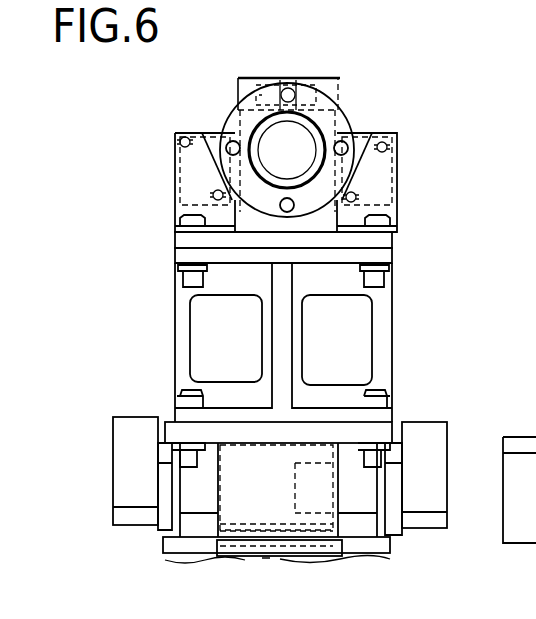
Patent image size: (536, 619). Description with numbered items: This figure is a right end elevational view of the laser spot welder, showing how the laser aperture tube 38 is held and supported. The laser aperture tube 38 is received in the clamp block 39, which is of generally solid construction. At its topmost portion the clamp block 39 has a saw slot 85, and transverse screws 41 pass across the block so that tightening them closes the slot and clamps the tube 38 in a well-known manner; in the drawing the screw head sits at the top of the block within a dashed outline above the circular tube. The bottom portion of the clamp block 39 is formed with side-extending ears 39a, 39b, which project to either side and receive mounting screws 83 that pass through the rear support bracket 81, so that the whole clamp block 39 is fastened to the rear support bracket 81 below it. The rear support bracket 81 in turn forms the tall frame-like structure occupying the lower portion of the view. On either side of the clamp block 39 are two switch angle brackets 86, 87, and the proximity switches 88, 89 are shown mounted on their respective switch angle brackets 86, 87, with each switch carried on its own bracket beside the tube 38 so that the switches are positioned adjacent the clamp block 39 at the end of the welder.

The laser aperture tube 38 is at (305, 118).
The clamp block 39 is at (340, 75).
The side-extending ear 39a is at (393, 238).
The side-extending ear 39b is at (175, 243).
The transverse screws 41 is at (240, 56).
The rear support bracket 81 is at (392, 318).
The mounting screws 83 is at (382, 221).
The saw slot 85 is at (298, 44).
The switch angle bracket 86 is at (403, 176).
The switch angle bracket 87 is at (175, 190).
The proximity switch 88 is at (394, 151).
The proximity switch 89 is at (180, 140).